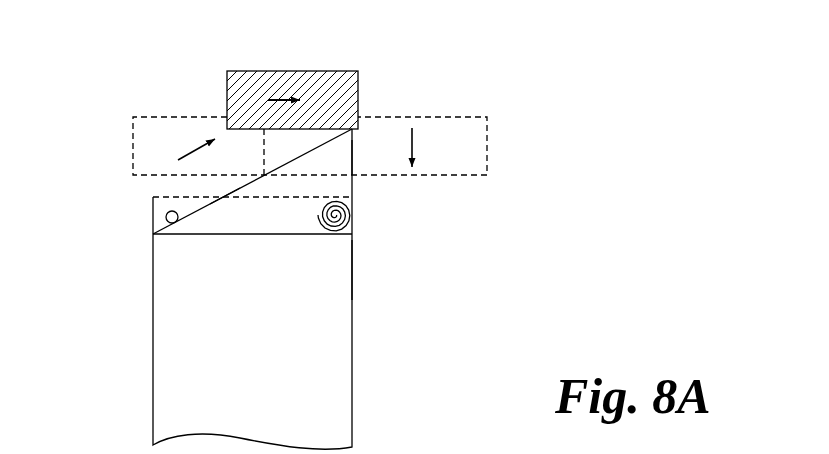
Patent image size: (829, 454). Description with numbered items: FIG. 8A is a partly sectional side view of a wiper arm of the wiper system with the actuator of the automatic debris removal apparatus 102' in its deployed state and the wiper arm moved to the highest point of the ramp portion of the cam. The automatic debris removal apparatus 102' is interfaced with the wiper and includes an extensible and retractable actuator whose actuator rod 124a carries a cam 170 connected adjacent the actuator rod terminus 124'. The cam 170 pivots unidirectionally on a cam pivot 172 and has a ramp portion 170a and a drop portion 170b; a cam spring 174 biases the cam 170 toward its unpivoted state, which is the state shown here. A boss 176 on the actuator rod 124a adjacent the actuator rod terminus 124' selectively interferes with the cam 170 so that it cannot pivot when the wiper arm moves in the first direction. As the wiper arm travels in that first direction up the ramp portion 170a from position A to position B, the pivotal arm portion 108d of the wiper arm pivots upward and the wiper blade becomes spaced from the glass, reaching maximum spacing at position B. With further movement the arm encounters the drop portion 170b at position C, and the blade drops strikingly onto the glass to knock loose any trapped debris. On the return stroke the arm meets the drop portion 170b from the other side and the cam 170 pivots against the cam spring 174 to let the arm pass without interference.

The automatic debris removal apparatus 102' is at (306, 289).
The pivotal arm portion 108d is at (125, 131).
The actuator rod terminus 124' is at (218, 215).
The actuator rod 124a is at (355, 270).
The cam 170 is at (227, 228).
The ramp portion 170a is at (230, 192).
The drop portion 170b is at (352, 178).
The cam pivot 172 is at (328, 235).
The cam spring 174 is at (318, 221).
The boss 176 is at (162, 220).
The position A is at (178, 107).
The position B is at (280, 52).
The direction C is at (420, 107).